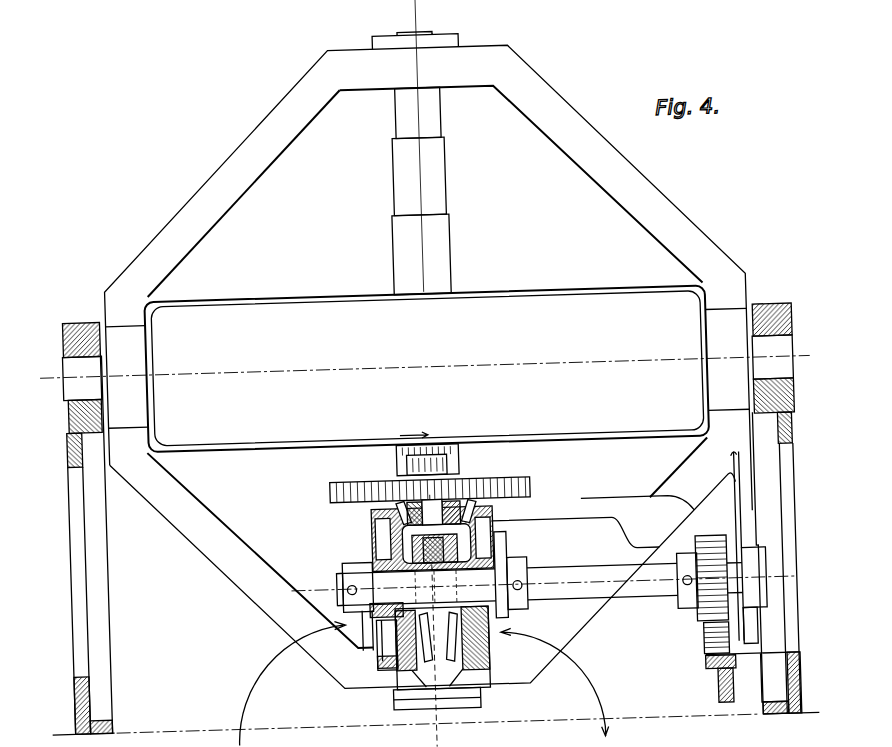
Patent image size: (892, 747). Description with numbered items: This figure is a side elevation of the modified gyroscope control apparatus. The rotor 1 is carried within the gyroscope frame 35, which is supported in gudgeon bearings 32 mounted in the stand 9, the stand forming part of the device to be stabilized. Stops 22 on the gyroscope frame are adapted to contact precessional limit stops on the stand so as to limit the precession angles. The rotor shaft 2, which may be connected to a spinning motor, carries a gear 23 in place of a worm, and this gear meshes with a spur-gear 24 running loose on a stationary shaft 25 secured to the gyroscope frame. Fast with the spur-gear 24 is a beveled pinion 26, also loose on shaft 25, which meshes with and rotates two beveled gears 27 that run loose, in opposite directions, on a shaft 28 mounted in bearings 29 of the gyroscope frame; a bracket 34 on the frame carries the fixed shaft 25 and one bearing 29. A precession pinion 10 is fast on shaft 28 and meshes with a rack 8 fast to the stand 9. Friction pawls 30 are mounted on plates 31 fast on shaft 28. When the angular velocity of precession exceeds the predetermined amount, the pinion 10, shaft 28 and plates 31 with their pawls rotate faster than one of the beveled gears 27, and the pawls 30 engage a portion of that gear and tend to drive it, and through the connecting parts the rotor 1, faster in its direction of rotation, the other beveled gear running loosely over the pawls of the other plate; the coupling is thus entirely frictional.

The rotor 1 is at (507, 299).
The shaft 2 is at (451, 259).
The rack 8 is at (691, 668).
The stand 9 is at (90, 617).
The precession pinion 10 is at (699, 541).
The stops 22 is at (742, 635).
The gear 23 is at (403, 458).
The spur-gear 24 is at (519, 480).
The stationary shaft 25 is at (431, 506).
The beveled pinion 26 is at (404, 500).
The beveled gears 27 is at (398, 671).
The shaft 28 is at (630, 594).
The bearings 29 is at (752, 571).
The friction pawls 30 is at (569, 733).
The plate 31 is at (498, 610).
The gudgeon bearings 32 is at (76, 340).
The bracket 34 is at (414, 555).
The gyroscope frame 35 is at (545, 104).